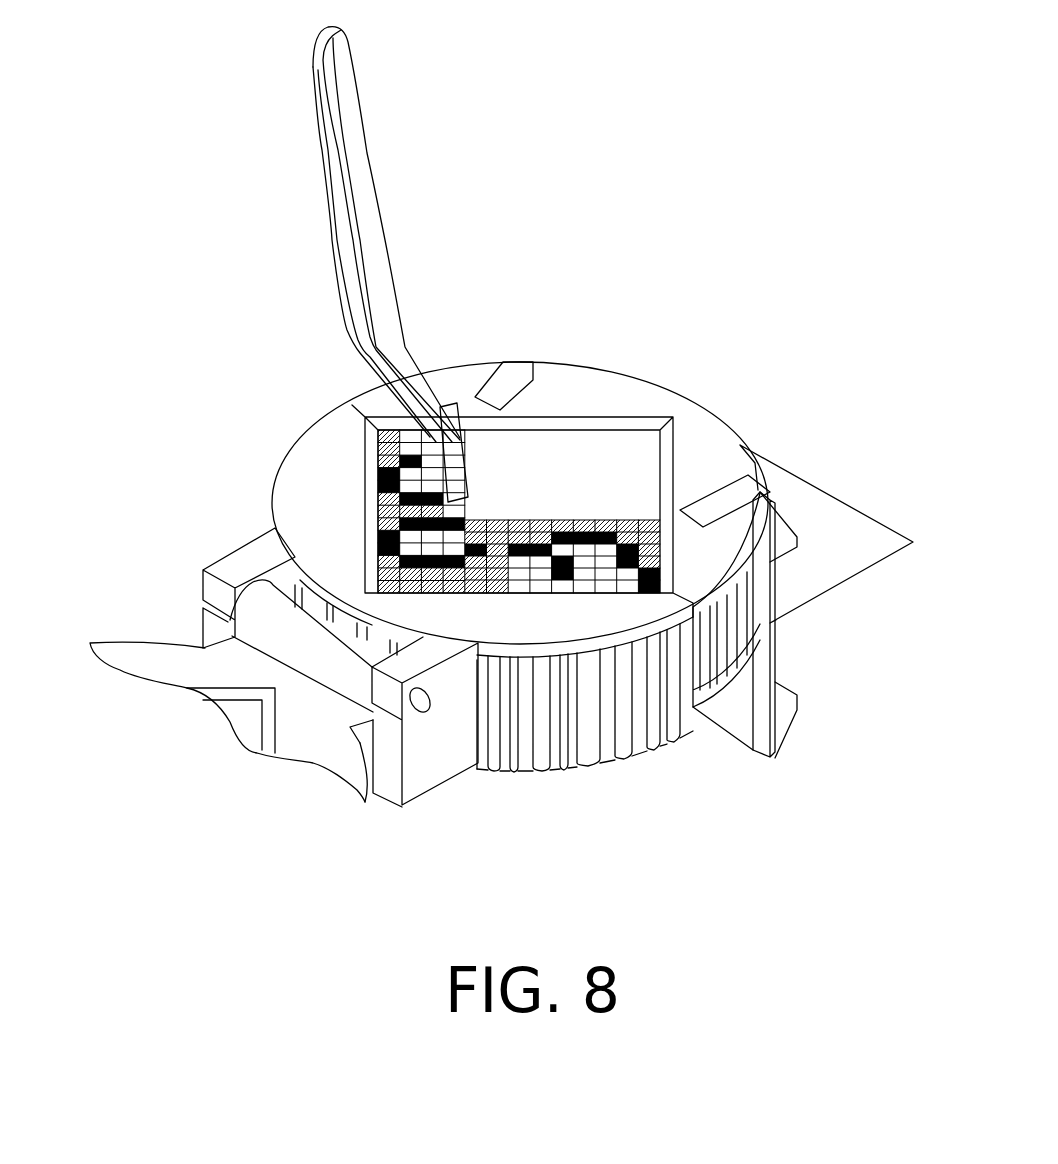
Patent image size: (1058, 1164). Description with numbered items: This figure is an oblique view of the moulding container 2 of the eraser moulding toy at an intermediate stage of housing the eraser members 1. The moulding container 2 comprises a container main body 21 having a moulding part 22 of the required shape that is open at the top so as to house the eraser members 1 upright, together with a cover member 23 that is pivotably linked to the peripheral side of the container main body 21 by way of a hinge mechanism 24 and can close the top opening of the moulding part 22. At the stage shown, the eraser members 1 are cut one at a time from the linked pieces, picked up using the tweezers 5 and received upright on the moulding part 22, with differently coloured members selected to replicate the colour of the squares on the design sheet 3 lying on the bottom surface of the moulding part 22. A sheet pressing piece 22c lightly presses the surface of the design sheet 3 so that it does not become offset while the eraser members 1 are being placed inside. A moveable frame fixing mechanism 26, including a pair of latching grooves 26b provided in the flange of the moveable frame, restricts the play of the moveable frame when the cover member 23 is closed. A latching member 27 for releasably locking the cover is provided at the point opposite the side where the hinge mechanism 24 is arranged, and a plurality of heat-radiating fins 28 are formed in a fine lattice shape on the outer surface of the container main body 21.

The eraser member 1 is at (468, 476).
The moulding container 2 is at (233, 457).
The design sheet 3 is at (865, 535).
The tweezers 5 is at (353, 98).
The container main body 21 is at (715, 405).
The moulding part 22 is at (650, 459).
The sheet pressing piece 22c is at (775, 518).
The cover member 23 is at (120, 637).
The hinge mechanism 24 is at (422, 800).
The moveable frame fixing mechanism 26 is at (661, 400).
The latching groove 26b is at (507, 382).
The latching member 27 is at (753, 770).
The heat-radiating fin 28 is at (700, 722).